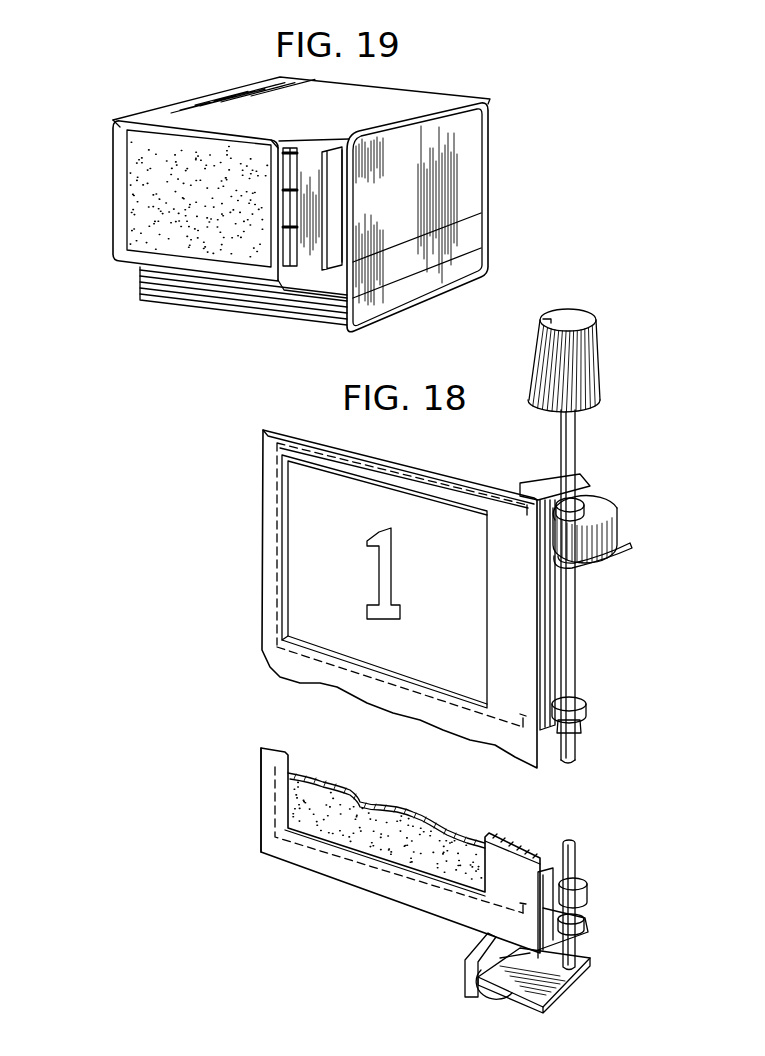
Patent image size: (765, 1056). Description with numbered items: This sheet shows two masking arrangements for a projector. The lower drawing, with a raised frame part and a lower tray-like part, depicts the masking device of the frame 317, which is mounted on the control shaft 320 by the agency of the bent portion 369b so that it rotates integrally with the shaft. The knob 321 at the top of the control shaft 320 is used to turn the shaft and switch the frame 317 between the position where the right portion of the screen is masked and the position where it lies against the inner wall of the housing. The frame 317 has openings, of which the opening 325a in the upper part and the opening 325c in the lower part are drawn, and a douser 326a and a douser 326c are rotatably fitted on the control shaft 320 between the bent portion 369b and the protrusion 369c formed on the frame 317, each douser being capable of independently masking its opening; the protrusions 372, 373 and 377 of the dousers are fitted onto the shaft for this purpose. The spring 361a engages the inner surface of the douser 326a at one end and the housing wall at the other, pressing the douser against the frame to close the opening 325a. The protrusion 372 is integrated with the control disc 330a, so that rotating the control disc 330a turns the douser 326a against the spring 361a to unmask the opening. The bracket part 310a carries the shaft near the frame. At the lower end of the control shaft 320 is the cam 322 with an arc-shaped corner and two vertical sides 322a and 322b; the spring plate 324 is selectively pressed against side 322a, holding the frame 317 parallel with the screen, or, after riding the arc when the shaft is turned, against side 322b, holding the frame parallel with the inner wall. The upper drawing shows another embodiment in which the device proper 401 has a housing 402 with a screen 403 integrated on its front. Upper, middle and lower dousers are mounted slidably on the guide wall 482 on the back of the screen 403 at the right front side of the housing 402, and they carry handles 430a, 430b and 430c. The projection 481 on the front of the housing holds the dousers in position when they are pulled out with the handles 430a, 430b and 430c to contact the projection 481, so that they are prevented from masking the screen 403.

In FIG. 19, the device proper 401 is at (205, 100).
In FIG. 19, the housing 402 is at (120, 134).
In FIG. 19, the screen 403 is at (132, 220).
In FIG. 19, the handle 430a is at (297, 147).
In FIG. 19, the handle 430b is at (284, 212).
In FIG. 19, the handle 430c is at (281, 262).
In FIG. 19, the projection 481 is at (335, 205).
In FIG. 19, the guide wall 482 is at (317, 152).
In FIG. 18, the frame 317 is at (263, 463).
In FIG. 18, the opening 325a is at (297, 573).
In FIG. 18, the douser 326a is at (290, 628).
In FIG. 18, the bracket top plate 310a is at (552, 477).
In FIG. 18, the knob 321 is at (604, 330).
In FIG. 18, the control shaft 320 is at (577, 433).
In FIG. 18, the protrusion 372 is at (582, 502).
In FIG. 18, the control disc 330a is at (608, 503).
In FIG. 18, the spring 361a is at (613, 563).
In FIG. 18, the protrusion 373 is at (578, 700).
In FIG. 18, the protrusion 369c is at (583, 729).
In FIG. 18, the opening 325c is at (312, 780).
In FIG. 18, the douser 326c is at (292, 808).
In FIG. 18, the protrusion 377 is at (588, 892).
In FIG. 18, the bent portion 369b is at (583, 931).
In FIG. 18, the cam 322 is at (565, 997).
In FIG. 18, the side 322a is at (510, 980).
In FIG. 18, the side 322b is at (490, 996).
In FIG. 18, the spring plate 324 is at (463, 983).